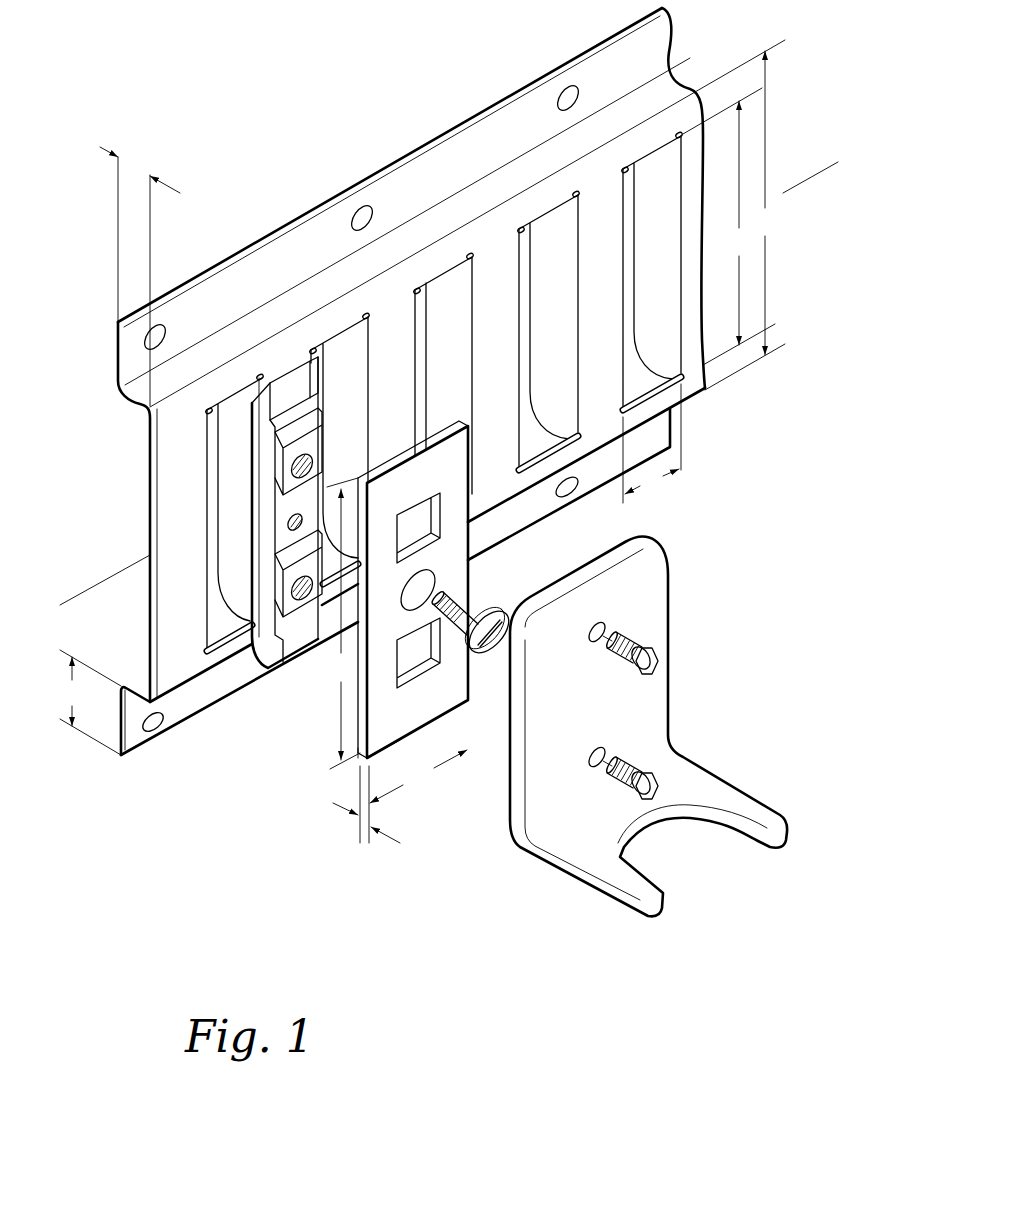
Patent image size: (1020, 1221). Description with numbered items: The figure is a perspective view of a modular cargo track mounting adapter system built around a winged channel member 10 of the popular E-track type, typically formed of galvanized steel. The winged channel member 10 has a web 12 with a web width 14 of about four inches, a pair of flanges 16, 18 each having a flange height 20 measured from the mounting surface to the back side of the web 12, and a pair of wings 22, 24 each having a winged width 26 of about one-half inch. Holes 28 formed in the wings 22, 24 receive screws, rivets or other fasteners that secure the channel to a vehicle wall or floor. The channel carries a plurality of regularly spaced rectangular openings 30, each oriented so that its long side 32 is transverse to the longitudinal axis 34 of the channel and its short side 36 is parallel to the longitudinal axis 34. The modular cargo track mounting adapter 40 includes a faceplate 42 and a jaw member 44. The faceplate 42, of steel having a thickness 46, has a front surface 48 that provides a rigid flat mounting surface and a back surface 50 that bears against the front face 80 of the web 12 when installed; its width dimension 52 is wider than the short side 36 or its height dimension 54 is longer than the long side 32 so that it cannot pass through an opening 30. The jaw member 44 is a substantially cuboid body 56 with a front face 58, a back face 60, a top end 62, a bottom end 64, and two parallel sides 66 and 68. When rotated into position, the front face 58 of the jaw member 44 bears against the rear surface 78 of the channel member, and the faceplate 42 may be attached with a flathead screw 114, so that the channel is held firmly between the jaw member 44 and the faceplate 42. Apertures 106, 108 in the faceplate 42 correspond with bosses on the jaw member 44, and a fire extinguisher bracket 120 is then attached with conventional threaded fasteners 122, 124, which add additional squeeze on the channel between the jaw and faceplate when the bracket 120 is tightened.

The winged channel member 10 is at (508, 124).
The web 12 is at (688, 190).
The web width 14 is at (745, 220).
The flange 16 is at (670, 94).
The flange 18 is at (142, 689).
The flange height 20 is at (140, 276).
The wing 22 is at (428, 147).
The wing 24 is at (224, 700).
The winged width 26 is at (90, 702).
The holes 28 is at (582, 97).
The rectangular openings 30 is at (665, 234).
The long side 32 is at (729, 226).
The longitudinal axis 34 is at (113, 576).
The short side 36 is at (652, 443).
The modular cargo track mounting adapter 40 is at (418, 877).
The faceplate 42 is at (364, 749).
The jaw member 44 is at (268, 613).
The thickness 46 is at (380, 813).
The front surface 48 is at (400, 722).
The back surface 50 is at (410, 447).
The width dimension 52 is at (418, 776).
The height dimension 54 is at (343, 623).
The cuboid body 56 is at (322, 443).
The front face 58 is at (303, 377).
The back face 60 is at (290, 526).
The top end 62 is at (293, 367).
The bottom end 64 is at (290, 658).
The side 66 is at (257, 474).
The side 68 is at (322, 493).
The rear surface 78 is at (149, 636).
The front face 80 is at (172, 531).
The aperture 106 is at (433, 518).
The aperture 108 is at (420, 670).
The flathead screw 114 is at (489, 647).
The fire extinguisher bracket 120 is at (657, 609).
The threaded fastener 122 is at (657, 663).
The threaded fastener 124 is at (657, 780).